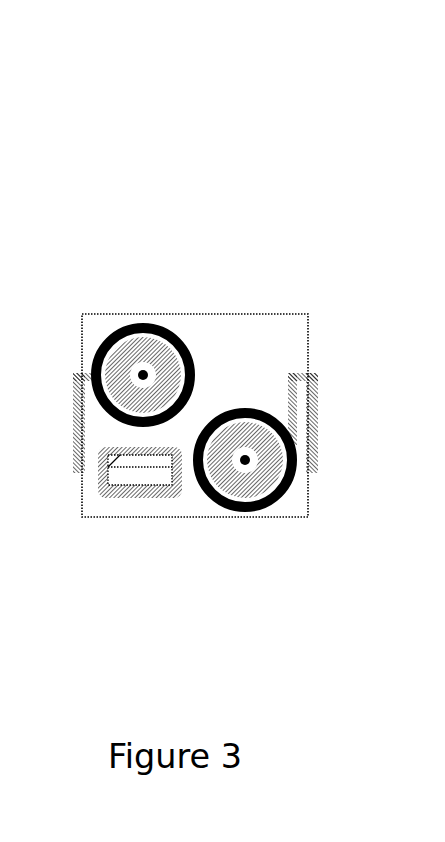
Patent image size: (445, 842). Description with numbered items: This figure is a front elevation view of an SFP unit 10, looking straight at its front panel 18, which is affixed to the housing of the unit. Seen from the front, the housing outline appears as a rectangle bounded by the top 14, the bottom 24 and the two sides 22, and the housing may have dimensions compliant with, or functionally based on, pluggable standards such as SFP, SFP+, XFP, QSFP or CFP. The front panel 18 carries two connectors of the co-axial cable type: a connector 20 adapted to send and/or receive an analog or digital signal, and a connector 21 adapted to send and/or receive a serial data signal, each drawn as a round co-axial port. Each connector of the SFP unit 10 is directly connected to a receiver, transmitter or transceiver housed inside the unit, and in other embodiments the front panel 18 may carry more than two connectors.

The SFP unit 10 is at (229, 58).
The top 14 is at (180, 314).
The front panel 18 is at (274, 360).
The connector 20 is at (181, 332).
The connector 21 is at (281, 494).
The sides 22 is at (82, 483).
The bottom 24 is at (160, 517).